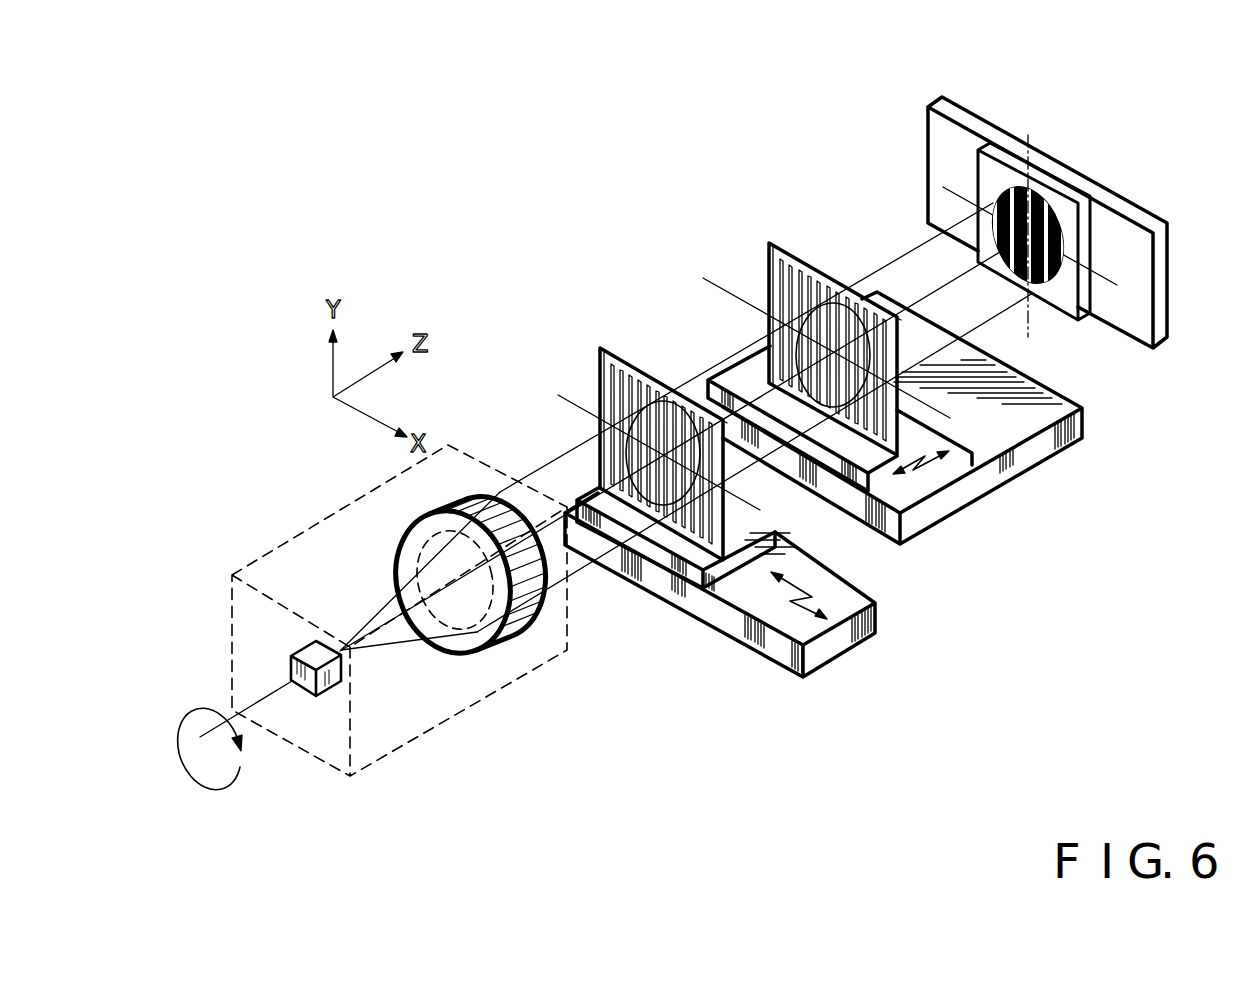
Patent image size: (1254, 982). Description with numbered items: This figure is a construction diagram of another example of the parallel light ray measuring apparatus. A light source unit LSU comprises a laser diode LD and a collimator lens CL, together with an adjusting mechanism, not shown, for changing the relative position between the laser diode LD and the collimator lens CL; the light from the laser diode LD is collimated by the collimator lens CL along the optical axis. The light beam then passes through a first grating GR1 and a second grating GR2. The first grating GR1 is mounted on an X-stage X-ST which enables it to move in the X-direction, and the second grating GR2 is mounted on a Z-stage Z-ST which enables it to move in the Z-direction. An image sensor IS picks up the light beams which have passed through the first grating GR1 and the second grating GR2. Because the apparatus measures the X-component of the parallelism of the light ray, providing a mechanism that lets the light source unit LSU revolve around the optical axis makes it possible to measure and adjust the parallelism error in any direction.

The image sensor IS is at (927, 138).
The first grating GR1 is at (600, 362).
The second grating GR2 is at (769, 258).
The Z-stage Z-ST is at (987, 493).
The X-stage X-ST is at (855, 650).
The light source unit LSU is at (411, 750).
The laser diode LD is at (302, 646).
The collimator lens CL is at (447, 634).